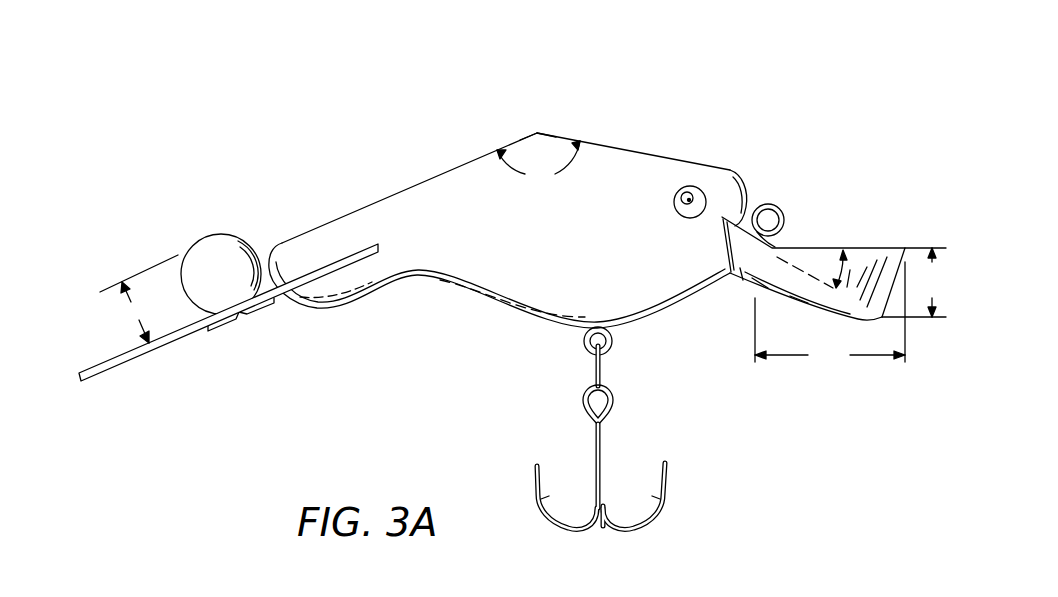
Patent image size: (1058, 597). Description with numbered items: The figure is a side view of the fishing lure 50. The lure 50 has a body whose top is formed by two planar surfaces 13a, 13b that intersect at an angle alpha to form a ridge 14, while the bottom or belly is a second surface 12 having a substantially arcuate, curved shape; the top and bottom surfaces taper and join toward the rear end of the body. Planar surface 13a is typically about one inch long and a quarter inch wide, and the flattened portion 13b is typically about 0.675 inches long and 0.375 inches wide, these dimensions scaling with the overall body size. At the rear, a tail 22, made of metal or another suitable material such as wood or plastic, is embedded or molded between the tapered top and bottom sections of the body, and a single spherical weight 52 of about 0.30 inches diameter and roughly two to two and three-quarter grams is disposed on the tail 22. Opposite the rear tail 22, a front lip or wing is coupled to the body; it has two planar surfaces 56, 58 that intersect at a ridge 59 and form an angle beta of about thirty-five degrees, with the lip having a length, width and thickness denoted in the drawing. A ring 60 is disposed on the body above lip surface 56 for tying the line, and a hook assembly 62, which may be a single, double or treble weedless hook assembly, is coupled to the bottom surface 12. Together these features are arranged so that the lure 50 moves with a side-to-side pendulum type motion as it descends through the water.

The lure 50 is at (512, 276).
The bottom surface 12 is at (653, 322).
The planar surface 13a is at (409, 188).
The planar surface 13b is at (612, 142).
The ridge 14 is at (537, 132).
The tail 22 is at (108, 361).
The weight 52 is at (220, 252).
The lip surface 56 is at (733, 182).
The lip surface 58 is at (888, 248).
The ridge 59 is at (783, 242).
The ring 60 is at (763, 204).
The hook assembly 62 is at (632, 429).